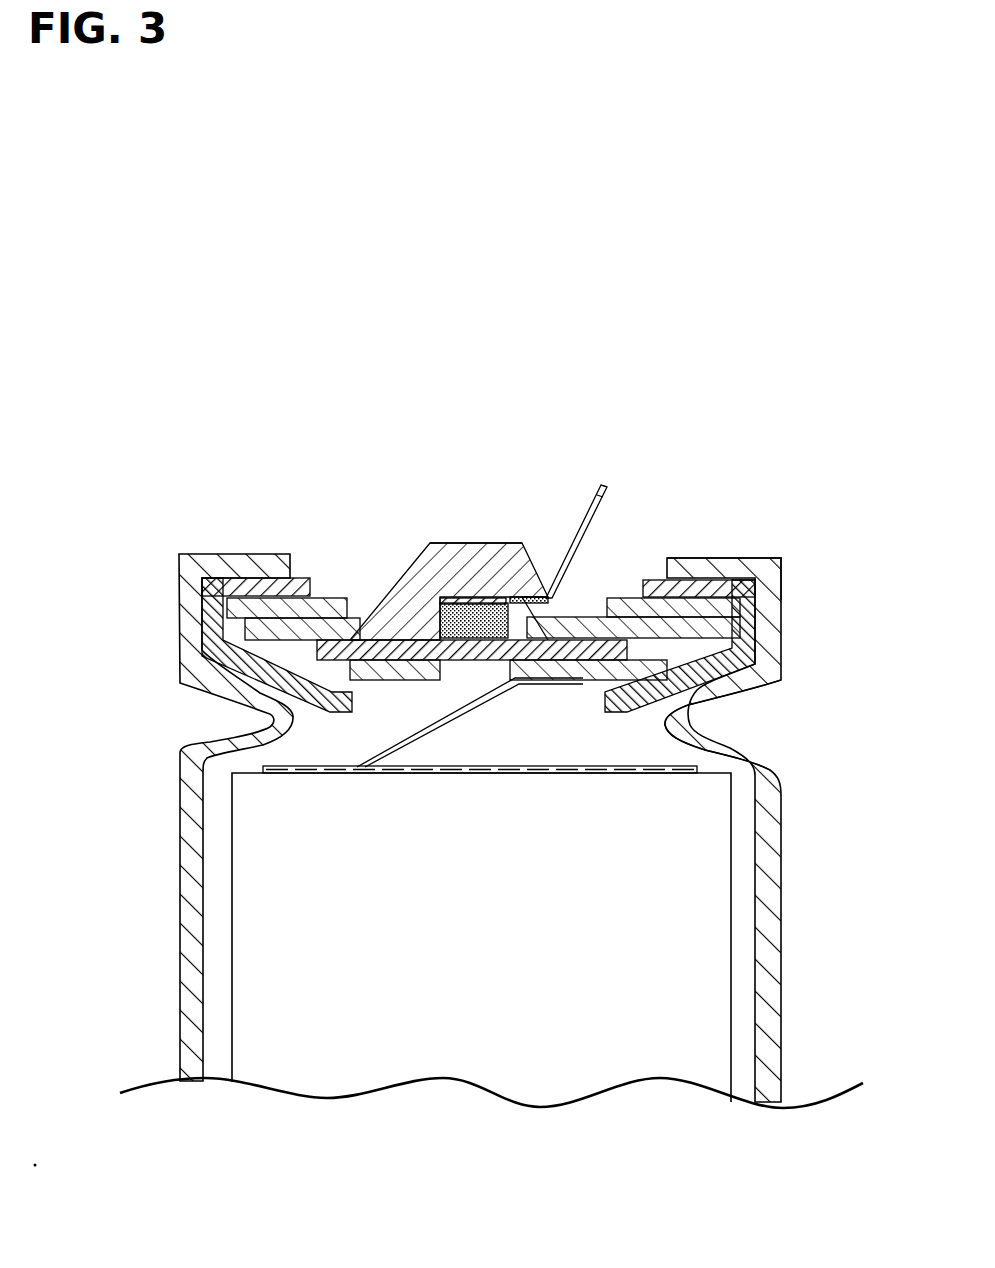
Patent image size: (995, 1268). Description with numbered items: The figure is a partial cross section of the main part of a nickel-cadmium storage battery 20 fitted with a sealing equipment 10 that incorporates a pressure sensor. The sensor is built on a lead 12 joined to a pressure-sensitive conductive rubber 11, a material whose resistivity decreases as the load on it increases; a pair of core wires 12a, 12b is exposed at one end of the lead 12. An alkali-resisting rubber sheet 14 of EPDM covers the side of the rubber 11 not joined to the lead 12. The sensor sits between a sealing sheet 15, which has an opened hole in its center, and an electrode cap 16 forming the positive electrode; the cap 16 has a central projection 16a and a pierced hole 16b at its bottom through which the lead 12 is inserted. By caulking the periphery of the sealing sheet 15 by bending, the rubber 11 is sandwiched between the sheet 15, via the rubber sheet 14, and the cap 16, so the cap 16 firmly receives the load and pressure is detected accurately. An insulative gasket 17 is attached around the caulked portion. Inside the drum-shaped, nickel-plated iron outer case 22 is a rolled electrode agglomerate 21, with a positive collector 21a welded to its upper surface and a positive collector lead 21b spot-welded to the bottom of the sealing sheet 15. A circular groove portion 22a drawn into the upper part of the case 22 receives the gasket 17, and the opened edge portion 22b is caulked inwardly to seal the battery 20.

The sealing equipment 10 is at (453, 522).
The pressure-sensitive conductive rubber 11 is at (437, 662).
The lead 12 is at (578, 548).
The core wire 12a is at (602, 502).
The core wire 12b is at (603, 500).
The alkali-resisting rubber sheet 14 is at (530, 672).
The sealing sheet 15 is at (250, 642).
The electrode cap 16 is at (402, 598).
The projection 16a is at (467, 550).
The pierced hole 16b is at (570, 612).
The insulative gasket 17 is at (758, 624).
The nickel-cadmium storage battery 20 is at (152, 949).
The rolled electrode agglomerate 21 is at (693, 923).
The positive collector 21a is at (590, 765).
The positive collector lead 21b is at (468, 713).
The outer case 22 is at (770, 817).
The circular groove portion 22a is at (750, 708).
The opened edge portion 22b is at (732, 560).